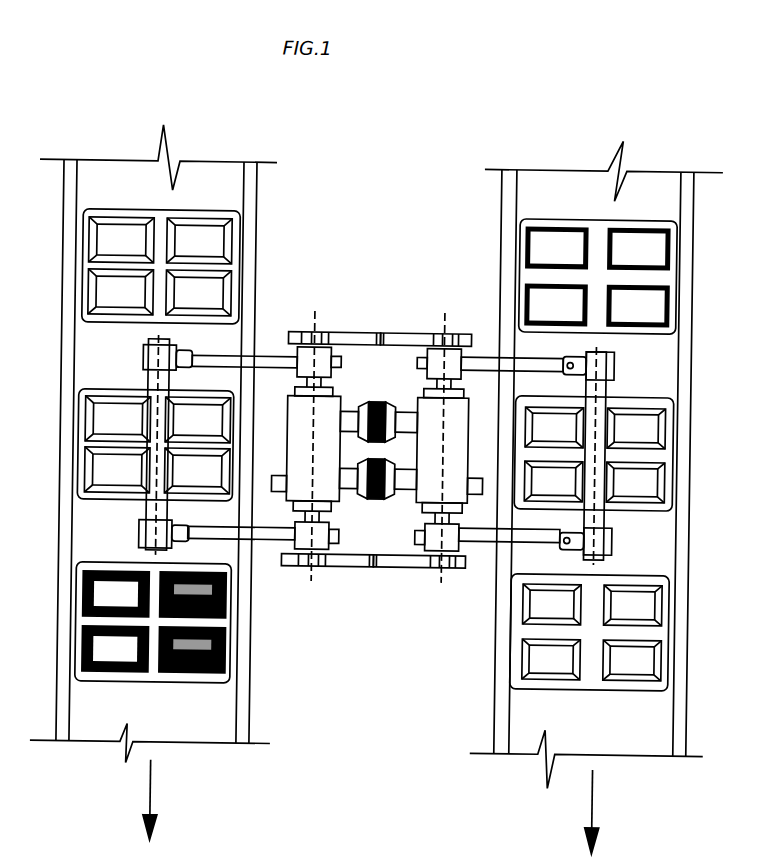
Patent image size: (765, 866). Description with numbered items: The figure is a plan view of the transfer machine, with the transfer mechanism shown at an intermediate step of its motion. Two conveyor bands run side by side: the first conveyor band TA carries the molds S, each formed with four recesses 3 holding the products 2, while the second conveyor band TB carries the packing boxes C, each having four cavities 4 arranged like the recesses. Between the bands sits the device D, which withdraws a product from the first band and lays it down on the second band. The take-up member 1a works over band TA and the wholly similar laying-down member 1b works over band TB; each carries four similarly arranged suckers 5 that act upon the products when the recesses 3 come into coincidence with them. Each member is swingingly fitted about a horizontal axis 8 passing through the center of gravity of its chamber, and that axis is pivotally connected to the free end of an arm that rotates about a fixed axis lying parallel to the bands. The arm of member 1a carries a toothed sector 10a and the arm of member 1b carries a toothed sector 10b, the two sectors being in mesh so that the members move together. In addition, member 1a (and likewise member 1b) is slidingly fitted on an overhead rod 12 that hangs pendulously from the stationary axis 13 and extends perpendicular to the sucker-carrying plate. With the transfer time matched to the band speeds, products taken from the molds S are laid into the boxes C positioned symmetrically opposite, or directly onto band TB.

The take-up member 1a is at (450, 433).
The laying-down member 1b is at (305, 428).
The product 2 is at (540, 305).
The recess 3 is at (650, 433).
The cavity 4 is at (212, 245).
The sucker 5 is at (362, 481).
The horizontal axis 8 is at (298, 384).
The toothed sector 10a is at (428, 333).
The toothed sector 10b is at (345, 333).
The overhead rod 12 is at (273, 358).
The stationary axis 13 is at (147, 340).
The mold S is at (672, 465).
The first conveyor band TA is at (588, 168).
The second conveyor band TB is at (125, 160).
The packing box C is at (46, 376).
The device D is at (390, 303).